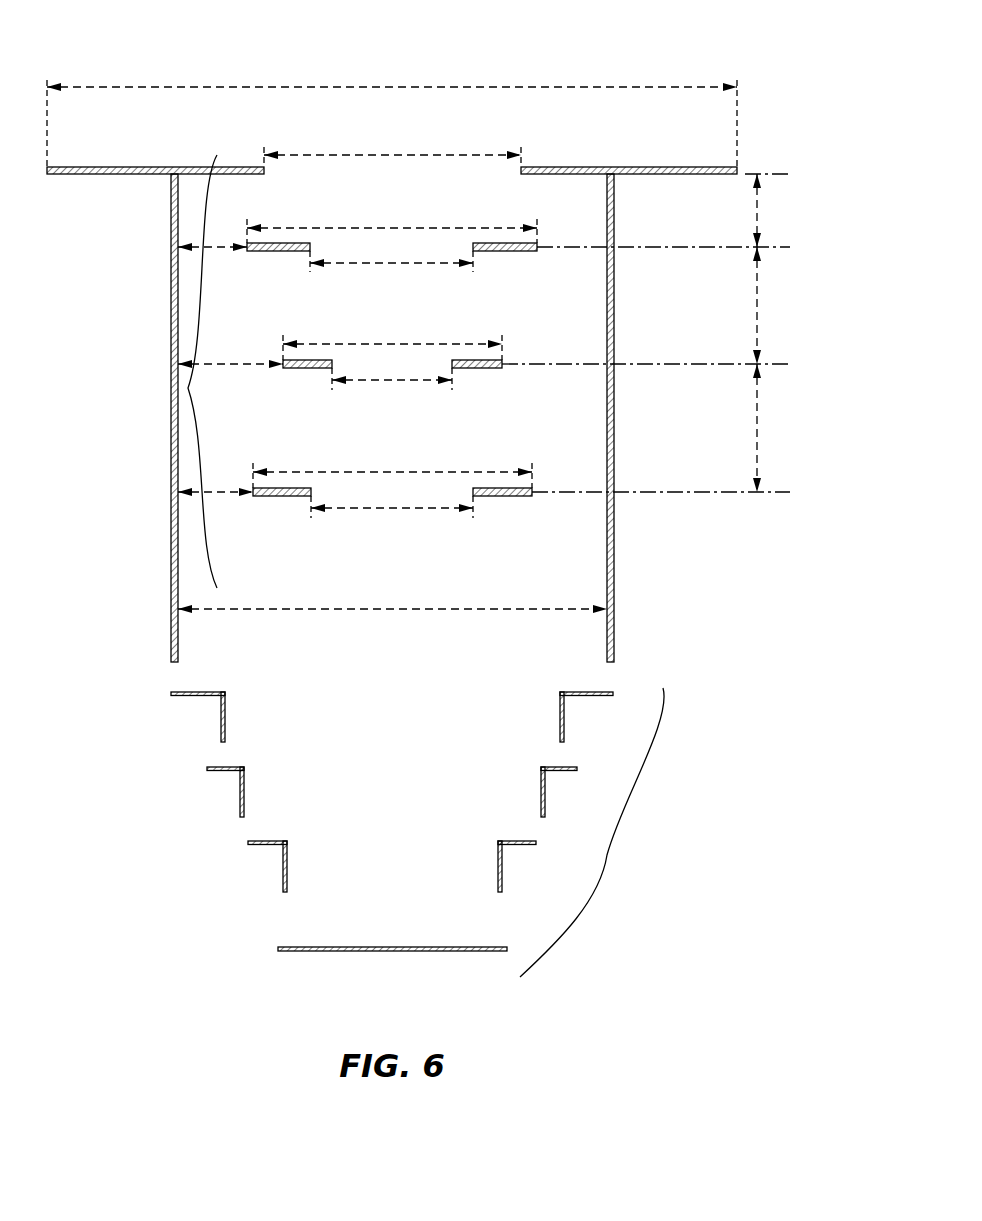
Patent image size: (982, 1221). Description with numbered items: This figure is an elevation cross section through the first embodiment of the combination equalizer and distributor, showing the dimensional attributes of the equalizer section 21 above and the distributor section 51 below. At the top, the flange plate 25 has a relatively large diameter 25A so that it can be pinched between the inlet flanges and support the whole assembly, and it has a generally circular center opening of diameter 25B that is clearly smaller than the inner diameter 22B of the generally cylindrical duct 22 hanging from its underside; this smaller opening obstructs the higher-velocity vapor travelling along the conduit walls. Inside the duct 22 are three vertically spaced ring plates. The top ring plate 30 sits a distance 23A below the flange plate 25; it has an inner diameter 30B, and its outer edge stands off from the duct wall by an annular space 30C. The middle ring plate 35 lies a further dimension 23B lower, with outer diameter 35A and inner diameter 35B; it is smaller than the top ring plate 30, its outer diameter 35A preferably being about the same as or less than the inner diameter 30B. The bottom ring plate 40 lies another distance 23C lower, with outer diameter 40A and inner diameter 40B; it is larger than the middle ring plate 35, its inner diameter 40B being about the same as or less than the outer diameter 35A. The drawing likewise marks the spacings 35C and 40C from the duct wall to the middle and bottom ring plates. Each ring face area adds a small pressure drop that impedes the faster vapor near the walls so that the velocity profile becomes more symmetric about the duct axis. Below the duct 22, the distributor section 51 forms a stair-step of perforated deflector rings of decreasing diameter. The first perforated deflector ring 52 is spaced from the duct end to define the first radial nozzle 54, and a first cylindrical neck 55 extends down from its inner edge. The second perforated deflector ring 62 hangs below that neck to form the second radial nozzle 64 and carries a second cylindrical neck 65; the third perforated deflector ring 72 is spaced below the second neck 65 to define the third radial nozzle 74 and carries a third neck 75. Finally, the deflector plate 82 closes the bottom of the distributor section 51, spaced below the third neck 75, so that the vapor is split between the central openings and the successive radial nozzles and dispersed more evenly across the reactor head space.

The equalizer section 21 is at (187, 389).
The duct 22 is at (171, 478).
The inner diameter of the duct 22B is at (405, 610).
The distance below flange plate to top cross vanes 23A is at (759, 204).
The dimension between top and middle cross vanes 23B is at (761, 306).
The distance between middle and bottom cross vanes 23C is at (761, 416).
The flange plate 25 is at (183, 167).
The diameter of flange plate 25A is at (539, 87).
The diameter of flange plate center opening 25B is at (413, 155).
The top ring plate 30 is at (465, 228).
The inner diameter of top ring plate 30B is at (372, 264).
The annular space 30C is at (228, 248).
The middle ring plate 35 is at (303, 369).
The outer diameter of middle ring plate 35A is at (439, 344).
The inner diameter of middle ring plate 35B is at (372, 381).
The second shelf wall spacing 35C is at (237, 365).
The bottom ring plate 40 is at (283, 497).
The outer diameter of bottom ring plate 40A is at (439, 472).
The inner diameter of bottom ring plate 40B is at (372, 509).
The third shelf wall spacing 40C is at (227, 493).
The distributor section 51 is at (607, 855).
The first perforated deflector ring 52 is at (566, 691).
The first radial nozzle 54 is at (168, 676).
The first cylindrical neck 55 is at (559, 725).
The second perforated deflector ring 62 is at (545, 766).
The second radial nozzle 64 is at (203, 754).
The second cylindrical neck 65 is at (540, 800).
The third perforated deflector ring 72 is at (503, 840).
The third radial nozzle 74 is at (236, 831).
The third neck 75 is at (497, 878).
The deflector plate 82 is at (340, 953).